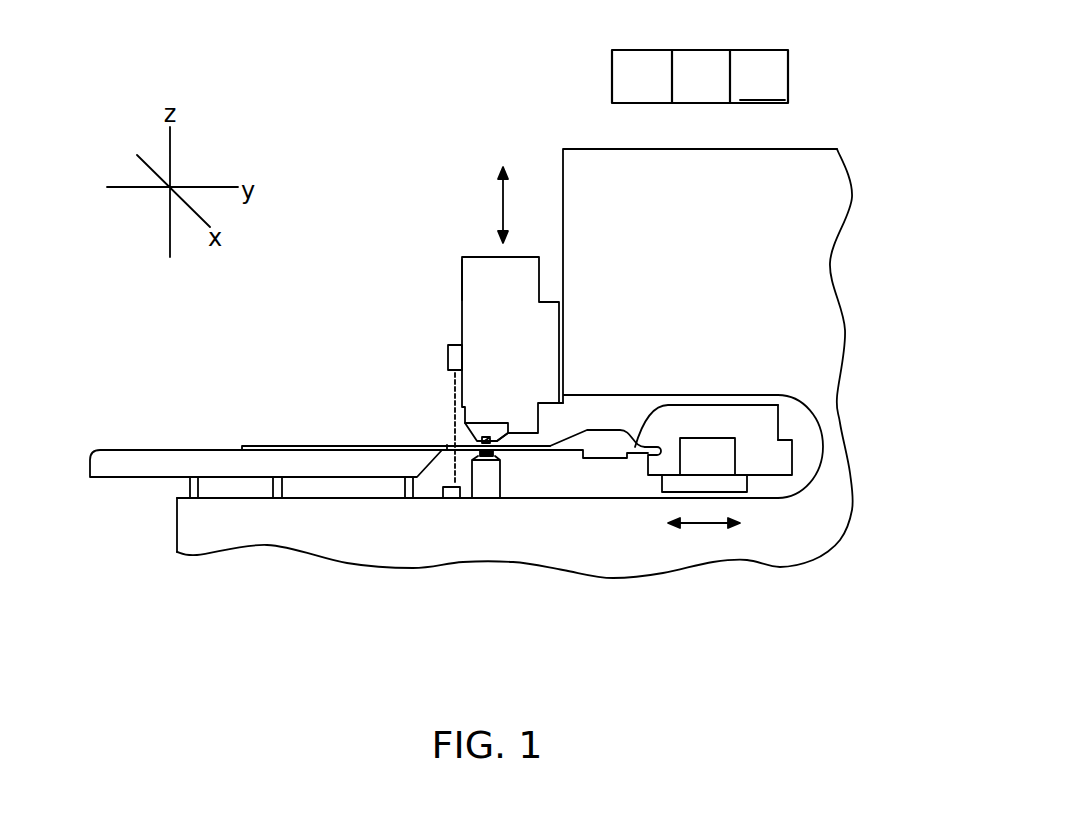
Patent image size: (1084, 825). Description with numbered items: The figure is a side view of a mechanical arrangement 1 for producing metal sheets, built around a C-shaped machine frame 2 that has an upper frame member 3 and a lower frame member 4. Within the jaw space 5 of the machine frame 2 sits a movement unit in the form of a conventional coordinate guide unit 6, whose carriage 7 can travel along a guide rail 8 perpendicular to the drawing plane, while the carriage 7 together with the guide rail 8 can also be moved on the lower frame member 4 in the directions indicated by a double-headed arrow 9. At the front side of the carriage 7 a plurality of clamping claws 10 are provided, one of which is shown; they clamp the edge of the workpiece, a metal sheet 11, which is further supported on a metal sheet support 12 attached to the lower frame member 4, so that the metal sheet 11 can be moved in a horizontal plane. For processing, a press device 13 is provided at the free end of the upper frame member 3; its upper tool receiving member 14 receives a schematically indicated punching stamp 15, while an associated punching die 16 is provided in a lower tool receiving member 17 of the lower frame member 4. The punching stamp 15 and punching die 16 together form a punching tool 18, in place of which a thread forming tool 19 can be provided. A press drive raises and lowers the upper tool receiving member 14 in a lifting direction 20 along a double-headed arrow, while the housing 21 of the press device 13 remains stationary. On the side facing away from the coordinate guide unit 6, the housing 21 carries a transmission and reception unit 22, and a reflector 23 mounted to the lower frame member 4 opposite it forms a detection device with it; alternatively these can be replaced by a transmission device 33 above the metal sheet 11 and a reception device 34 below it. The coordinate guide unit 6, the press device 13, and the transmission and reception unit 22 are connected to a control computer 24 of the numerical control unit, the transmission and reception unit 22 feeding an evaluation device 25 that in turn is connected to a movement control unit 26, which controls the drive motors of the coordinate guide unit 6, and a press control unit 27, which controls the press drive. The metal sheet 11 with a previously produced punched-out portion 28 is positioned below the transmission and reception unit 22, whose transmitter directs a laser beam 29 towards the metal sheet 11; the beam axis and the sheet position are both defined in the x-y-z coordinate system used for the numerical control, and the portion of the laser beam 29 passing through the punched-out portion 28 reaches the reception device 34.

The mechanical arrangement 1 is at (857, 152).
The machine frame 2 is at (836, 258).
The upper frame member 3 is at (777, 191).
The lower frame member 4 is at (211, 536).
The jaw space 5 is at (818, 448).
The coordinate guide unit 6 is at (795, 418).
The carriage 7 is at (746, 438).
The guide rail 8 is at (696, 475).
The double-headed arrow 9 is at (712, 525).
The clamping claws 10 is at (605, 452).
The metal sheet 11 is at (272, 447).
The metal sheet support 12 is at (135, 458).
The press device 13 is at (496, 293).
The upper tool receiving member 14 is at (483, 428).
The punching stamp 15 is at (490, 437).
The punching die 16 is at (492, 460).
The lower tool receiving member 17 is at (482, 488).
The punching tool 18 is at (567, 551).
The thread forming tool 19 is at (506, 459).
The lifting direction 20 is at (500, 203).
The housing 21 is at (460, 273).
The transmission and reception unit 22 is at (370, 327).
The transmission device 33 is at (448, 348).
The reflector 23 is at (381, 559).
The reception device 34 is at (447, 500).
The control computer 24 is at (602, 80).
The evaluation device 25 is at (628, 91).
The movement control unit 26 is at (686, 91).
The press control unit 27 is at (745, 88).
The punched-out portion 28 is at (448, 442).
The laser beam 29 is at (450, 400).